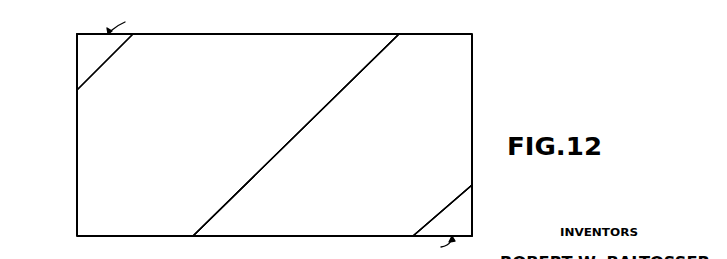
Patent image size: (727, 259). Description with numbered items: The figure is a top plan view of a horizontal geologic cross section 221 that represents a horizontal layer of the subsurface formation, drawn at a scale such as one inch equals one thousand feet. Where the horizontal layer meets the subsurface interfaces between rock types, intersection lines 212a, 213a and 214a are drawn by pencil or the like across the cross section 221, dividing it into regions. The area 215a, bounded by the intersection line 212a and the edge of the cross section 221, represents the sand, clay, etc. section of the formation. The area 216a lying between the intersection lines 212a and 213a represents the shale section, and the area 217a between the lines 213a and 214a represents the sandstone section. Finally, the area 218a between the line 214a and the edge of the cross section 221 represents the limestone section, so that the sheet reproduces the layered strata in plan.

The cross section 221 is at (77, 107).
The sand, clay, etc. area 215a is at (115, 48).
The intersection line 212a is at (155, 72).
The intersection line 213a is at (305, 127).
The shale area 216a is at (227, 121).
The sandstone area 217a is at (391, 176).
The intersection line 214a is at (434, 217).
The limestone area 218a is at (469, 220).